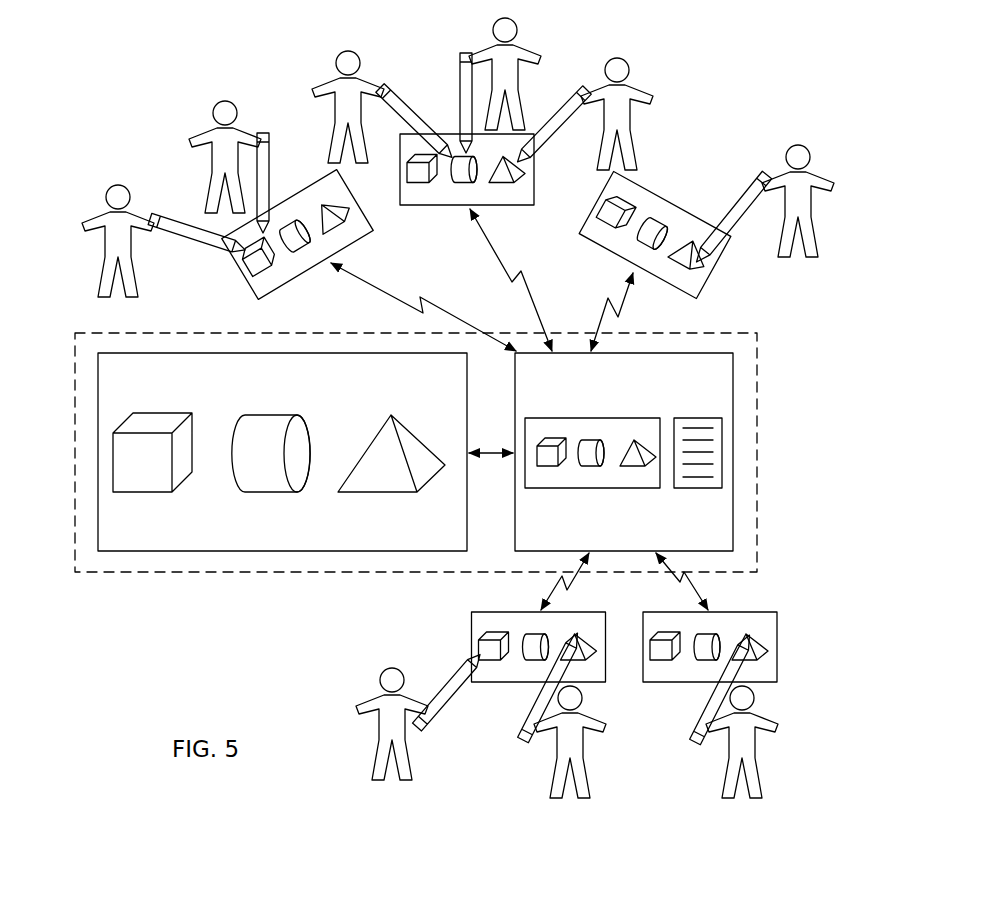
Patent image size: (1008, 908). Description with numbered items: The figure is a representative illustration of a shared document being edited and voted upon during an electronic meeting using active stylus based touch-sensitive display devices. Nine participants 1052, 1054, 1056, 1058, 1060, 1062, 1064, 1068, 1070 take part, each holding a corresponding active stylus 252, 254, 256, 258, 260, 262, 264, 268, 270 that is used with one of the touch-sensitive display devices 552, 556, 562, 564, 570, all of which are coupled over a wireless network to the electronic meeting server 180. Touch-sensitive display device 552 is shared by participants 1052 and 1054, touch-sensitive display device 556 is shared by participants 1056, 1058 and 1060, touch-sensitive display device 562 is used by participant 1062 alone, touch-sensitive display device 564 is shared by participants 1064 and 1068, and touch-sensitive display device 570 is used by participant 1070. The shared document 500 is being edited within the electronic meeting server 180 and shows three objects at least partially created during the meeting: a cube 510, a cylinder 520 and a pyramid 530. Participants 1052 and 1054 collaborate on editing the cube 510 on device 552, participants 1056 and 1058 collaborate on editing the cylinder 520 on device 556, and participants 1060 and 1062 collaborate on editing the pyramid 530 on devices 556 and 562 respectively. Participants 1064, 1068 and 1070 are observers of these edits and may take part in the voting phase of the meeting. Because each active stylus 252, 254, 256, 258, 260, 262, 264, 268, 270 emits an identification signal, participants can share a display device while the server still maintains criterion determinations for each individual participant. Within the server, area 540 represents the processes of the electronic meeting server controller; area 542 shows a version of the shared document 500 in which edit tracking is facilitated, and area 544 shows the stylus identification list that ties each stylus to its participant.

The electronic meeting server 180 is at (757, 398).
The shared document 500 is at (221, 540).
The cube 510 is at (142, 483).
The cylinder 520 is at (263, 483).
The pyramid 530 is at (383, 483).
The area 540 is at (733, 517).
The area 542 is at (600, 418).
The area 544 is at (690, 418).
The touch-sensitive display device 552 is at (285, 282).
The touch-sensitive display device 556 is at (434, 208).
The touch-sensitive display device 562 is at (703, 287).
The touch-sensitive display device 564 is at (472, 617).
The touch-sensitive display device 570 is at (777, 645).
The active stylus 252 is at (193, 246).
The active stylus 254 is at (270, 151).
The active stylus 256 is at (408, 102).
The active stylus 258 is at (460, 57).
The active stylus 260 is at (576, 135).
The active stylus 262 is at (735, 190).
The active stylus 264 is at (440, 672).
The active stylus 268 is at (518, 732).
The active stylus 270 is at (690, 732).
The participant 1052 is at (105, 196).
The participant 1054 is at (212, 110).
The participant 1056 is at (336, 57).
The participant 1058 is at (518, 28).
The participant 1060 is at (628, 68).
The participant 1062 is at (811, 156).
The participant 1064 is at (380, 679).
The participant 1068 is at (556, 770).
The participant 1070 is at (727, 770).